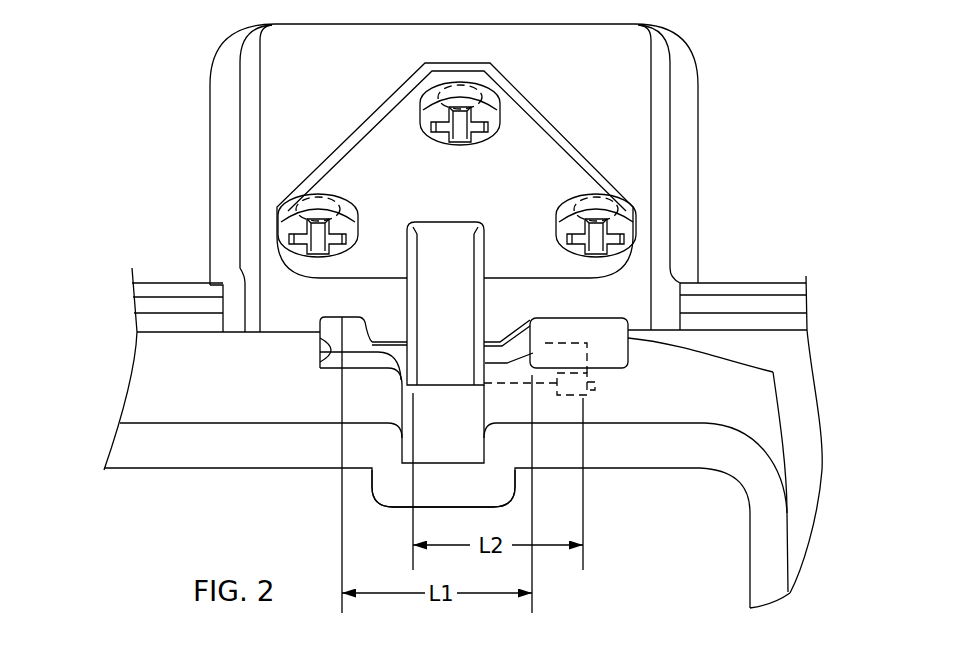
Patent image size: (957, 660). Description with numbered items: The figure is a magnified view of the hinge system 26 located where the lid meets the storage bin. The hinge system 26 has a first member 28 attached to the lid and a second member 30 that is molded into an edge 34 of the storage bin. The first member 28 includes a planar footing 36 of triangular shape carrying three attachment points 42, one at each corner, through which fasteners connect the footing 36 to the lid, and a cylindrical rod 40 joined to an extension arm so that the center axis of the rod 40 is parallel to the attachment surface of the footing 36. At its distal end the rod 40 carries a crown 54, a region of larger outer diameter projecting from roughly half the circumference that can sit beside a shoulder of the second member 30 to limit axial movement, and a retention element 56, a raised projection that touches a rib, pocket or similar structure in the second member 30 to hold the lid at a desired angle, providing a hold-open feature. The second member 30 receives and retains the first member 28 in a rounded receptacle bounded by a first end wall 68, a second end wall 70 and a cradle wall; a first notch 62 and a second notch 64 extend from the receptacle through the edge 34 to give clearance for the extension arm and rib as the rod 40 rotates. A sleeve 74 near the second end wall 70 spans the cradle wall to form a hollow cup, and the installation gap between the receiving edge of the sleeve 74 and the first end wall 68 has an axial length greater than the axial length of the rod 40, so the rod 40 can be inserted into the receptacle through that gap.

The hinge system 26 is at (680, 230).
The first member 28 is at (340, 120).
The second member 30 is at (327, 393).
The edge 34 is at (207, 380).
The footing 36 is at (528, 143).
The rod 40 is at (500, 336).
The attachment points 42 is at (472, 100).
The crown 54 is at (567, 387).
The retention element 56 is at (595, 386).
The first notch 62 is at (430, 475).
The second notch 64 is at (385, 330).
The first end wall 68 is at (328, 352).
The second end wall 70 is at (773, 372).
The sleeve 74 is at (558, 323).